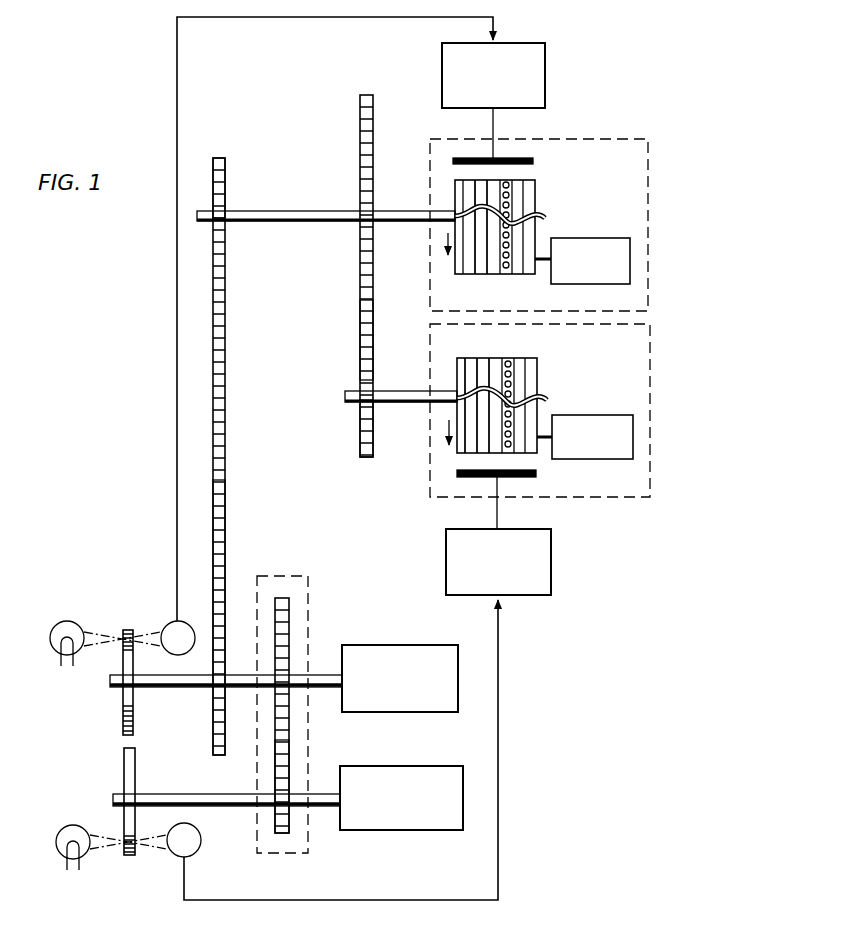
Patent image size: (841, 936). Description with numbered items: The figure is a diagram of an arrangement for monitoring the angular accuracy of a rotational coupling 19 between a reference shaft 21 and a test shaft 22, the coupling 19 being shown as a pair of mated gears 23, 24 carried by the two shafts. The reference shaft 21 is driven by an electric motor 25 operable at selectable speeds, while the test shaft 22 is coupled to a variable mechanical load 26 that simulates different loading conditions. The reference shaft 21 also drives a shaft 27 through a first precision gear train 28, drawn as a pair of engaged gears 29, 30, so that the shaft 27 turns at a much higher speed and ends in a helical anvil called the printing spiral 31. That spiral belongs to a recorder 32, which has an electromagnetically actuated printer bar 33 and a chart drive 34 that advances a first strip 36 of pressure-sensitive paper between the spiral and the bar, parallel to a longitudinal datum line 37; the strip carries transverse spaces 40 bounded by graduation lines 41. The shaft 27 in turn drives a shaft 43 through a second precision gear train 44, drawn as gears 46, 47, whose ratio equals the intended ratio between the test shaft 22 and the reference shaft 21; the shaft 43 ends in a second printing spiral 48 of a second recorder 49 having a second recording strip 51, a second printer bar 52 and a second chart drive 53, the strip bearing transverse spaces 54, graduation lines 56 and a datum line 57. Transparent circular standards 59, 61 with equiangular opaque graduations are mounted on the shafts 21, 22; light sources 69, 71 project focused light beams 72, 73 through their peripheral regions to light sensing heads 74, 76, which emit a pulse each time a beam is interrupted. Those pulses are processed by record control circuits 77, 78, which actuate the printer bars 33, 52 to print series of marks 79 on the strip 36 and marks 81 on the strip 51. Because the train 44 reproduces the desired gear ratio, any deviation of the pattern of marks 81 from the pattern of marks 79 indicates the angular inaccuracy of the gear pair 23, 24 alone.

The rotational coupling 19 is at (305, 573).
The reference shaft 21 is at (200, 689).
The test shaft 22 is at (200, 793).
The gear 23 is at (289, 627).
The gear 24 is at (283, 835).
The electric motor 25 is at (437, 645).
The variable mechanical load 26 is at (415, 830).
The shaft 27 is at (323, 212).
The first precision gear train 28 is at (228, 283).
The gear 29 is at (227, 507).
The gear 30 is at (226, 168).
The printing spiral 31 is at (546, 219).
The recorder 32 is at (653, 155).
The printer bar 33 is at (526, 158).
The chart drive 34 is at (592, 238).
The first strip 36 is at (538, 193).
The longitudinal datum line 37 is at (495, 183).
The transversely disposed spaces 40 is at (458, 258).
The graduation lines 41 is at (470, 264).
The shaft 43 is at (417, 392).
The second precision gear train 44 is at (358, 343).
The gear 46 is at (358, 130).
The gear 47 is at (360, 438).
The printing spiral 48 is at (548, 400).
The second recorder 49 is at (654, 357).
The second recording strip 51 is at (540, 357).
The second printer bar 52 is at (525, 478).
The second chart drive 53 is at (598, 459).
The transverse spaces 54 is at (470, 358).
The graduation lines 56 is at (478, 358).
The datum line 57 is at (500, 362).
The circular standard 59 is at (123, 718).
The circular standard 61 is at (124, 768).
The light source 69 is at (55, 630).
The light source 71 is at (59, 832).
The focused light beam 72 is at (87, 628).
The focused light beam 73 is at (90, 853).
The light sensing head 74 is at (166, 625).
The light sensing head 76 is at (199, 851).
The record control circuit 77 is at (548, 70).
The record control circuit 78 is at (552, 577).
The spaced marks 79 is at (509, 268).
The marks 81 is at (512, 365).